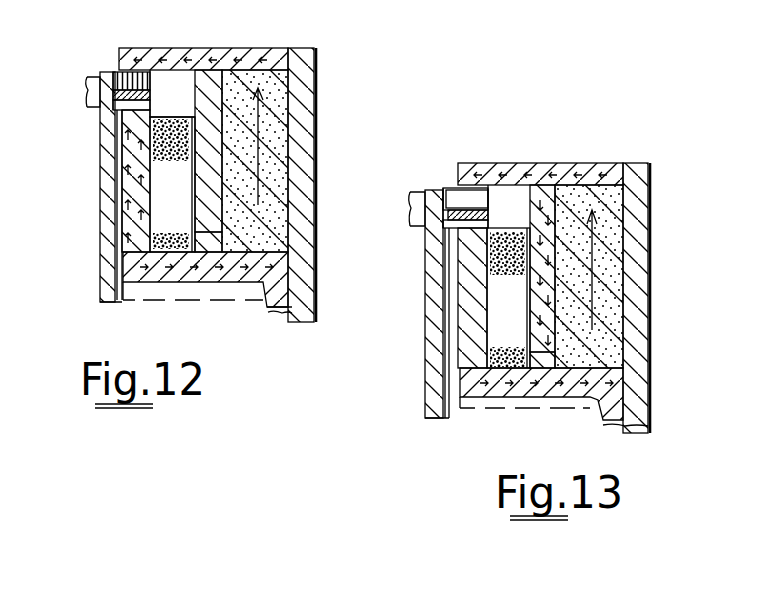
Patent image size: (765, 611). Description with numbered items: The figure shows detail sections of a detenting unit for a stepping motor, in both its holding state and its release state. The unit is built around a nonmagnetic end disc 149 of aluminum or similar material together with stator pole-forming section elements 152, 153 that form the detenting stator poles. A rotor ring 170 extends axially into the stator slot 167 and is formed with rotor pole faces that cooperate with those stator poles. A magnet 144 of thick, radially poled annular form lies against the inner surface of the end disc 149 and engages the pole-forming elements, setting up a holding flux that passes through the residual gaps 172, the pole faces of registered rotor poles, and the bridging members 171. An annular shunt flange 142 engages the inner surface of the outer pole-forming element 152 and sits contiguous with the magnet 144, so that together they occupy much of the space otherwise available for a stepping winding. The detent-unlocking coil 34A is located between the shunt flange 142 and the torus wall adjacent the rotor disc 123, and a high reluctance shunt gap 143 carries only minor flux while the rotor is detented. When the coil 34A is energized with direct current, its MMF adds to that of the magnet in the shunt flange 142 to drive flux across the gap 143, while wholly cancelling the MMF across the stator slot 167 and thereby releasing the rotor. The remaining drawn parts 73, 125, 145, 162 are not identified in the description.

In FIG. 12, the detent-unlocking coil 34A is at (170, 202).
In FIG. 13, the detent-unlocking coil 34A is at (513, 338).
In FIG. 12, the gap 73 is at (150, 100).
In FIG. 12, the rotor disc 123 is at (107, 193).
In FIG. 12, the side wall 125 is at (111, 187).
In FIG. 13, the side wall 125 is at (432, 297).
In FIG. 12, the shunt flange 142 is at (213, 92).
In FIG. 13, the shunt flange 142 is at (547, 208).
In FIG. 13, the high reluctance shunt gap 143 is at (545, 362).
In FIG. 12, the magnet 144 is at (243, 242).
In FIG. 13, the magnet 144 is at (608, 345).
In FIG. 12, the lower wall section 145 is at (212, 242).
In FIG. 12, the end disc 149 is at (308, 50).
In FIG. 13, the end disc 149 is at (638, 407).
In FIG. 12, the stator pole-forming section element 152 is at (197, 60).
In FIG. 13, the stator pole-forming section element 152 is at (533, 175).
In FIG. 12, the stator pole-forming section element 153 is at (133, 270).
In FIG. 13, the stator pole-forming section element 153 is at (492, 383).
In FIG. 12, the corner flange 162 is at (275, 306).
In FIG. 13, the corner flange 162 is at (610, 418).
In FIG. 13, the stator slot 167 is at (465, 208).
In FIG. 12, the rotor ring 170 is at (103, 63).
In FIG. 12, the bridging member 171 is at (112, 95).
In FIG. 13, the bridging member 171 is at (445, 217).
In FIG. 12, the residual gap 172 is at (137, 72).
In FIG. 13, the residual gap 172 is at (467, 183).